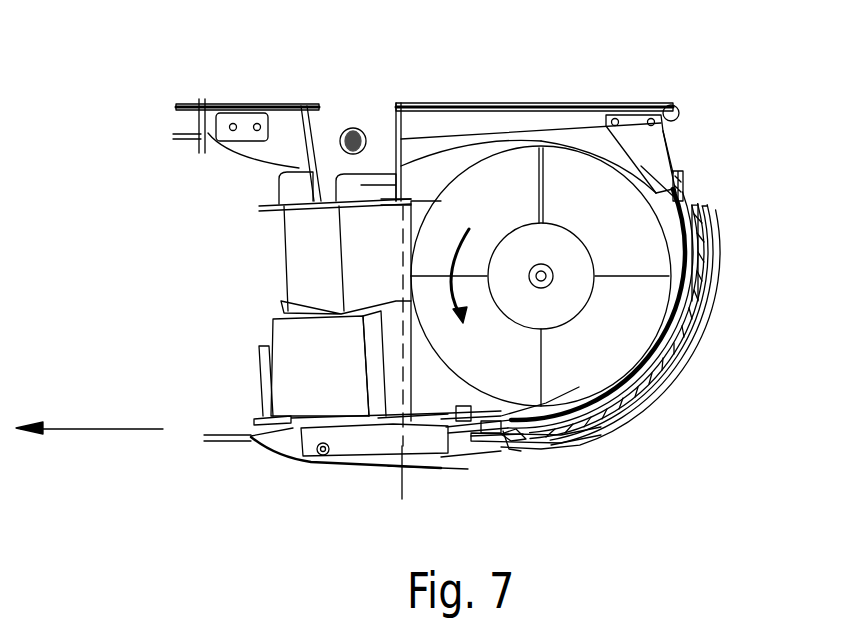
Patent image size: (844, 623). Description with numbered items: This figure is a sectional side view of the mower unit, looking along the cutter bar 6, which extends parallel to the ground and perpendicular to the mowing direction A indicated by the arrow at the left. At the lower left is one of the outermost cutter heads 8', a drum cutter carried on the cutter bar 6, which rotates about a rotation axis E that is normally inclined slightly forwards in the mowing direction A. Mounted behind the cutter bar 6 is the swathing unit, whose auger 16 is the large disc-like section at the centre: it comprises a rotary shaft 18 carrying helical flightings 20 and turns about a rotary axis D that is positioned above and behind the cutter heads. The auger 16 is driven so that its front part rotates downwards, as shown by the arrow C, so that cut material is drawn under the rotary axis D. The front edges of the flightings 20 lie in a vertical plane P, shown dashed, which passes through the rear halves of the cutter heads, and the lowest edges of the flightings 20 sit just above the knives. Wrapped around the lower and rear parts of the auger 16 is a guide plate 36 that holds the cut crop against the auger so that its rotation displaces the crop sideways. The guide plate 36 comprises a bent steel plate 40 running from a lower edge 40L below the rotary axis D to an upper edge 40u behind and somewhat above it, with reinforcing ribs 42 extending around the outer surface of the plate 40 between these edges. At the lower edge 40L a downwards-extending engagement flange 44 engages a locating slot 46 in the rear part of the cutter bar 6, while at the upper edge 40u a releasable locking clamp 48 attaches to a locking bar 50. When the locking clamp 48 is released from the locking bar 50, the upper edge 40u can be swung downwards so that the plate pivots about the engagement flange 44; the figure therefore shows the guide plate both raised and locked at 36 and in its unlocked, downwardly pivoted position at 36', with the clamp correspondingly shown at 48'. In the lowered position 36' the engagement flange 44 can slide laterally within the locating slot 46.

The auger 16 is at (573, 160).
The helical flightings 20 is at (613, 185).
The rotary shaft 18 is at (592, 264).
The rotary axis D is at (537, 270).
The arrow C is at (454, 258).
The vertical plane P is at (408, 253).
The rotation axes E is at (340, 253).
The outermost cutter heads 8' is at (286, 356).
The mowing direction A is at (93, 428).
The bent steel plate 40 is at (660, 362).
The upper edge 40u is at (680, 205).
The lower edge 40L is at (520, 423).
The guide plate 36 is at (646, 318).
The reinforcing ribs 42 is at (683, 315).
The guide plate in lowered position 36' is at (646, 329).
The releasable locking clamp 48 is at (735, 240).
The releasable locking clamp in lowered position 48' is at (671, 325).
The locking bar 50 is at (677, 180).
The cutter bar 6 is at (547, 443).
The engagement flange 44 is at (510, 433).
The locating slot 46 is at (510, 430).